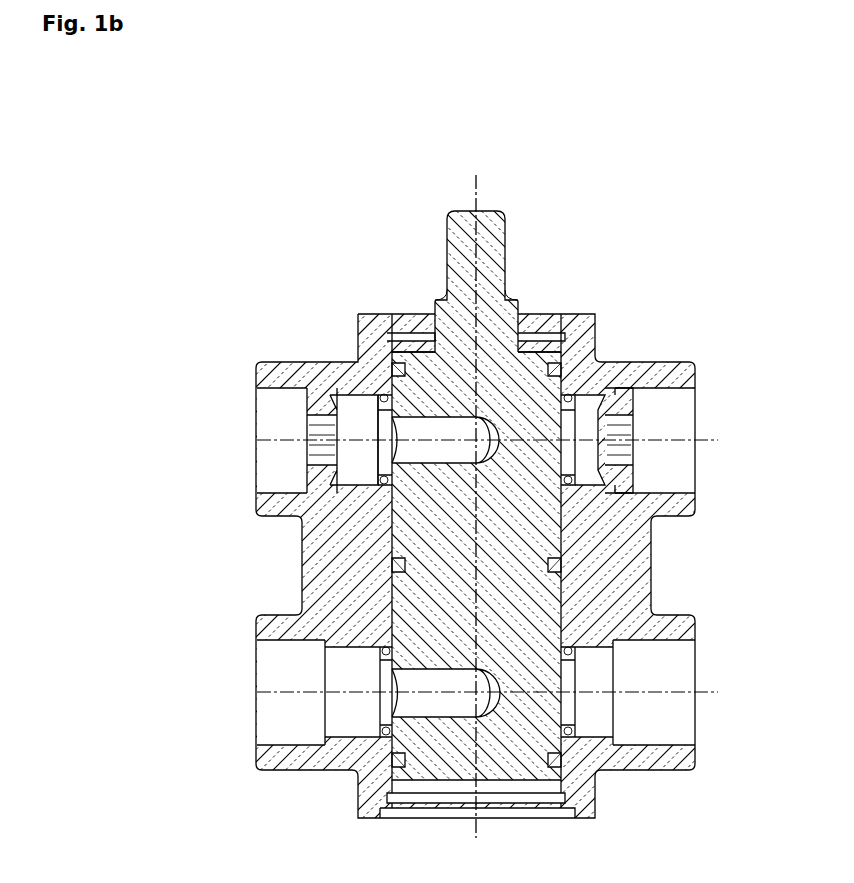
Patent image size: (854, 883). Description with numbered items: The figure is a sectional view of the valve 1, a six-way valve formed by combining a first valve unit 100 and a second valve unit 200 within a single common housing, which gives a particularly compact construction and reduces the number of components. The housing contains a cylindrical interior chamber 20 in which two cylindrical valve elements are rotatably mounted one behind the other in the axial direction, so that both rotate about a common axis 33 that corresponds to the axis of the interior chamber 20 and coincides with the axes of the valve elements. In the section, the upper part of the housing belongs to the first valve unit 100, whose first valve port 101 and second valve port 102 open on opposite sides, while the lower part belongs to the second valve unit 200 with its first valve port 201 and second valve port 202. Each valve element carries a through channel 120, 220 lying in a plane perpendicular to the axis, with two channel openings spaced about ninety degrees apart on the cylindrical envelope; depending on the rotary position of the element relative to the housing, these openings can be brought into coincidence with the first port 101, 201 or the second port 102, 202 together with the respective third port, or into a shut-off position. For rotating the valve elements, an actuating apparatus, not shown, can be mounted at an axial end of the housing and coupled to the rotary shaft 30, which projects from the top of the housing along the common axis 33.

The valve 1 is at (482, 141).
The interior chamber 20 is at (392, 522).
The rotary shaft 30 is at (500, 242).
The common axis 33 is at (478, 826).
The first valve unit 100 is at (702, 356).
The first valve port 101 is at (280, 410).
The second valve port 102 is at (660, 398).
The through channel 120 is at (417, 430).
The second valve unit 200 is at (702, 585).
The first valve port 201 is at (270, 726).
The second valve port 202 is at (632, 735).
The through channel 220 is at (415, 712).